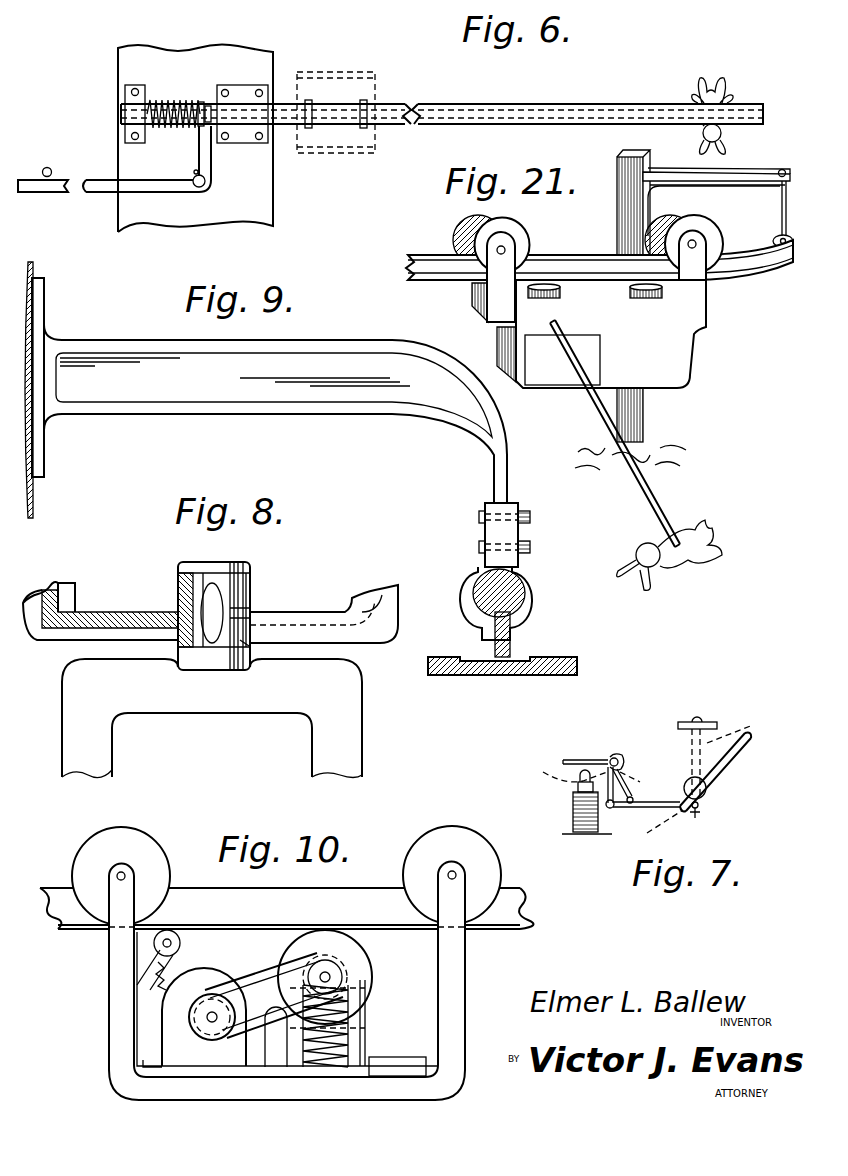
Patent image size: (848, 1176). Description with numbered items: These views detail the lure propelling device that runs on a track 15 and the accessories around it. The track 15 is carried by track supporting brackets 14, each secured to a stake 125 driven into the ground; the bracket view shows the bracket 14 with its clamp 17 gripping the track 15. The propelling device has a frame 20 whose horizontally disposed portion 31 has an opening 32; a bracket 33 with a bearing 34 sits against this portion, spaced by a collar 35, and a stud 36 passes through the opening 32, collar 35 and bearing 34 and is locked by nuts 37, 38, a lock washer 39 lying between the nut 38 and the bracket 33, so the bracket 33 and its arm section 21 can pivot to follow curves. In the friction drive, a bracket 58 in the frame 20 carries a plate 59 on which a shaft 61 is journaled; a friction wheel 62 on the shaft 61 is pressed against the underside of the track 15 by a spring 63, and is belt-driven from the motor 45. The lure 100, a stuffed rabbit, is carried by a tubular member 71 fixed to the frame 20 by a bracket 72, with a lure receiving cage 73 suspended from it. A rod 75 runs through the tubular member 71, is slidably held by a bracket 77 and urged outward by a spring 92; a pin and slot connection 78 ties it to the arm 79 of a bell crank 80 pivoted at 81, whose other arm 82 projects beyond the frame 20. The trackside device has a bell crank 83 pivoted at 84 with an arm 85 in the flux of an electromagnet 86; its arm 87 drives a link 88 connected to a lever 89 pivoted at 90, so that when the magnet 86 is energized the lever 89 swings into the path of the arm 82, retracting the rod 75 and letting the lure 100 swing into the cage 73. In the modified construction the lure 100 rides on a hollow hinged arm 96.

In FIG. 21, the track supporting bracket 14 is at (745, 184).
In FIG. 9, the track supporting bracket 14 is at (422, 395).
In FIG. 21, the track 15 is at (430, 270).
In FIG. 9, the track 15 is at (512, 652).
In FIG. 10, the track 15 is at (300, 898).
In FIG. 9, the clamp 17 is at (538, 592).
In FIG. 21, the frame 20 is at (688, 328).
In FIG. 8, the frame 20 is at (350, 727).
In FIG. 10, the frame 20 is at (117, 1034).
In FIG. 8, the left arm section 21 is at (60, 584).
In FIG. 8, the horizontally disposed portion 31 is at (180, 586).
In FIG. 8, the opening 32 is at (195, 562).
In FIG. 8, the bracket 33 is at (305, 610).
In FIG. 8, the bearing 34 is at (250, 616).
In FIG. 8, the collar 35 is at (250, 612).
In FIG. 8, the stud 36 is at (214, 598).
In FIG. 8, the nut 37 is at (238, 570).
In FIG. 8, the nut 38 is at (242, 650).
In FIG. 8, the lock washer 39 is at (213, 648).
In FIG. 10, the motor 45 is at (210, 975).
In FIG. 10, the bracket 58 is at (355, 1020).
In FIG. 10, the plate 59 is at (372, 985).
In FIG. 10, the shaft 61 is at (300, 965).
In FIG. 10, the friction wheel 62 is at (337, 940).
In FIG. 10, the spring 63 is at (357, 1050).
In FIG. 6, the tubular member 71 is at (450, 103).
In FIG. 6, the bracket 72 is at (247, 95).
In FIG. 6, the lure receiving cage 73 is at (341, 146).
In FIG. 6, the rod 75 is at (209, 106).
In FIG. 6, the bracket 77 is at (128, 95).
In FIG. 6, the pin and slot connection 78 is at (199, 102).
In FIG. 6, the arm 79 is at (212, 168).
In FIG. 6, the bell crank 80 is at (193, 171).
In FIG. 6, the pivot 81 is at (206, 186).
In FIG. 6, the arm 82 is at (133, 190).
In FIG. 7, the arm 82 is at (714, 722).
In FIG. 7, the bell crank 83 is at (608, 758).
In FIG. 7, the pivot 84 is at (620, 756).
In FIG. 7, the arm 85 is at (564, 767).
In FIG. 7, the electromagnet 86 is at (584, 783).
In FIG. 7, the arm 87 is at (632, 791).
In FIG. 7, the link 88 is at (628, 811).
In FIG. 6, the lever 89 is at (53, 170).
In FIG. 7, the lever 89 is at (733, 794).
In FIG. 7, the pivot 90 is at (705, 803).
In FIG. 6, the spring 92 is at (165, 100).
In FIG. 21, the arm 96 is at (662, 510).
In FIG. 6, the lure 100 is at (735, 90).
In FIG. 21, the lure 100 is at (683, 565).
In FIG. 21, the stake 125 is at (617, 223).